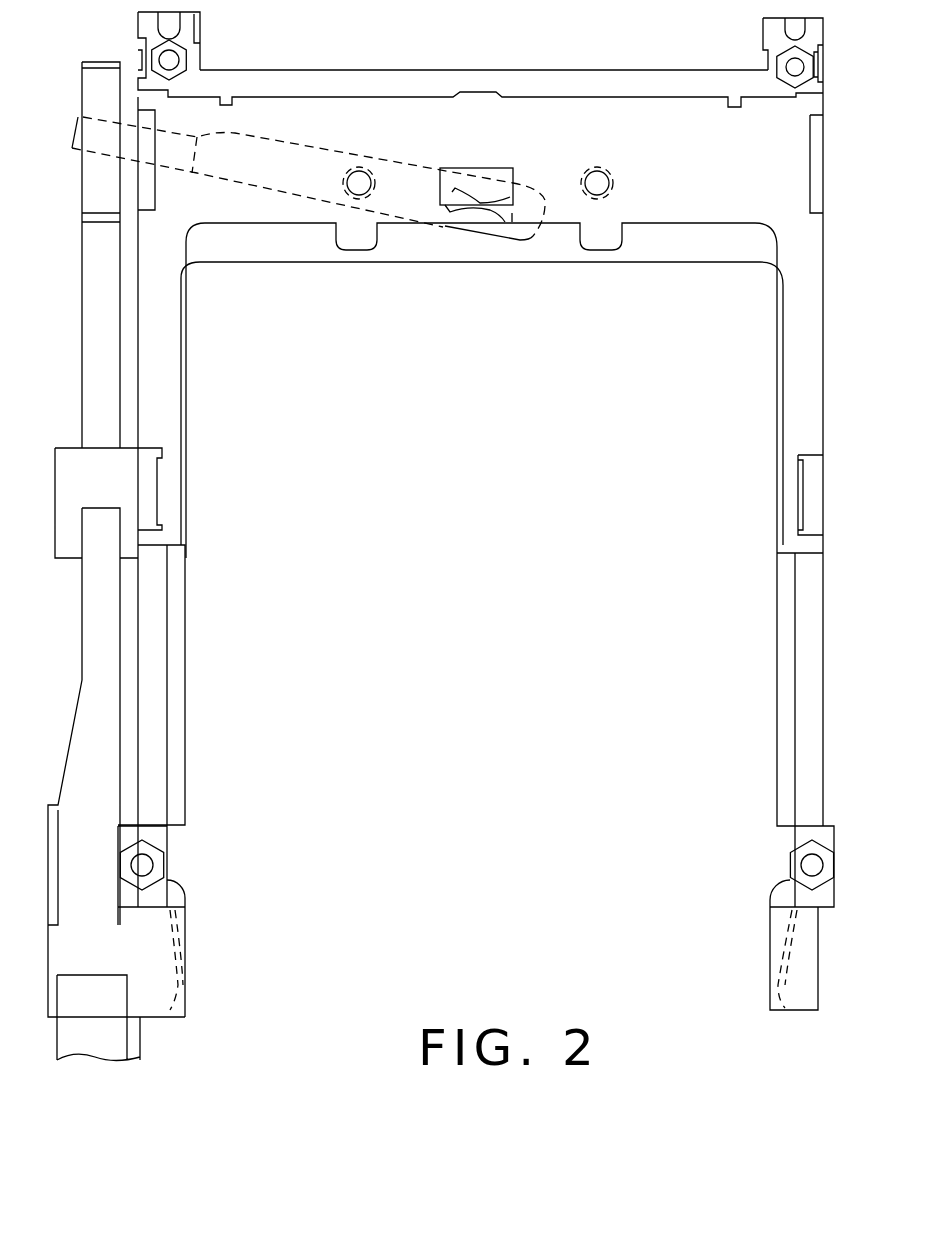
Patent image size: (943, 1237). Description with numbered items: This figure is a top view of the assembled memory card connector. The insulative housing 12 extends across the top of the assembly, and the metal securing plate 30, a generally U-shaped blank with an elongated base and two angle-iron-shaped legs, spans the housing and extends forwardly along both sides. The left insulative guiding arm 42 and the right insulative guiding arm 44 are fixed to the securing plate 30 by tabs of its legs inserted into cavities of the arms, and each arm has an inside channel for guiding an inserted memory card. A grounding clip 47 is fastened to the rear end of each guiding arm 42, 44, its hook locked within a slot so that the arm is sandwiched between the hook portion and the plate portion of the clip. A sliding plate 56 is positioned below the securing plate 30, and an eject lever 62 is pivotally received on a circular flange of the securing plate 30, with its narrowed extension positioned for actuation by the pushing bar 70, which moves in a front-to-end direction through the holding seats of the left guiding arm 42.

The insulative housing 12 is at (398, 82).
The securing plate 30 is at (683, 208).
The left insulative guiding arm 42 is at (153, 675).
The right insulative guiding arm 44 is at (800, 673).
The grounding clip 47 is at (178, 930).
The sliding plate 56 is at (478, 238).
The eject lever 62 is at (311, 183).
The pushing bar 70 is at (87, 757).